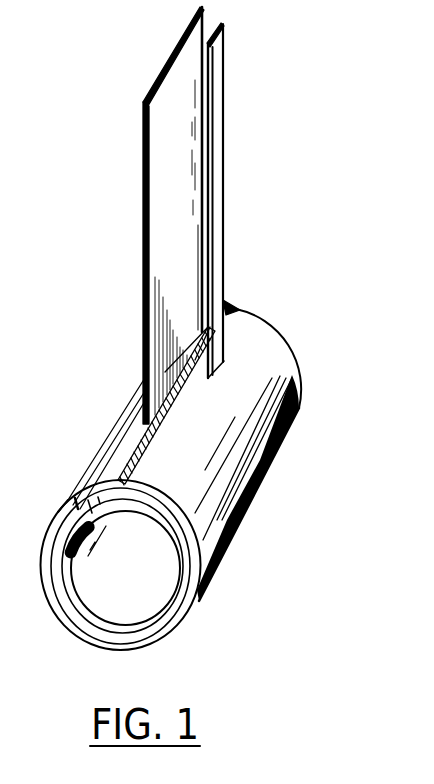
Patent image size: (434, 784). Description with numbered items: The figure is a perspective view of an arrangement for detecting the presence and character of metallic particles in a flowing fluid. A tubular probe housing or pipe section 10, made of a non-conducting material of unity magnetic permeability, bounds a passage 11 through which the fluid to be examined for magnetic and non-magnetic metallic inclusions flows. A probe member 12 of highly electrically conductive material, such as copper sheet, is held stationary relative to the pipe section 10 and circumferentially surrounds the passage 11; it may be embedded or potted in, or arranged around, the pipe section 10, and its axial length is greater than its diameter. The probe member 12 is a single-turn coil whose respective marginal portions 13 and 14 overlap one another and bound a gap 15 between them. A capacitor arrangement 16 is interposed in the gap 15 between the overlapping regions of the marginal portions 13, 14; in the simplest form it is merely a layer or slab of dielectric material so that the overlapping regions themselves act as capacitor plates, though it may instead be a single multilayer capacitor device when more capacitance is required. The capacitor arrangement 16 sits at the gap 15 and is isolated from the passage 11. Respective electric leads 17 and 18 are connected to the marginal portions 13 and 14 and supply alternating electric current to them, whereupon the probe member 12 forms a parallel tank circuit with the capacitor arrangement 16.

The tubular probe housing 10 is at (162, 622).
The passage 11 is at (97, 612).
The probe member 12 is at (222, 533).
The marginal portion 13 is at (103, 455).
The marginal portion 14 is at (104, 522).
The gap 15 is at (70, 497).
The capacitor arrangement 16 is at (122, 490).
The electric lead 17 is at (157, 166).
The electric lead 18 is at (221, 130).